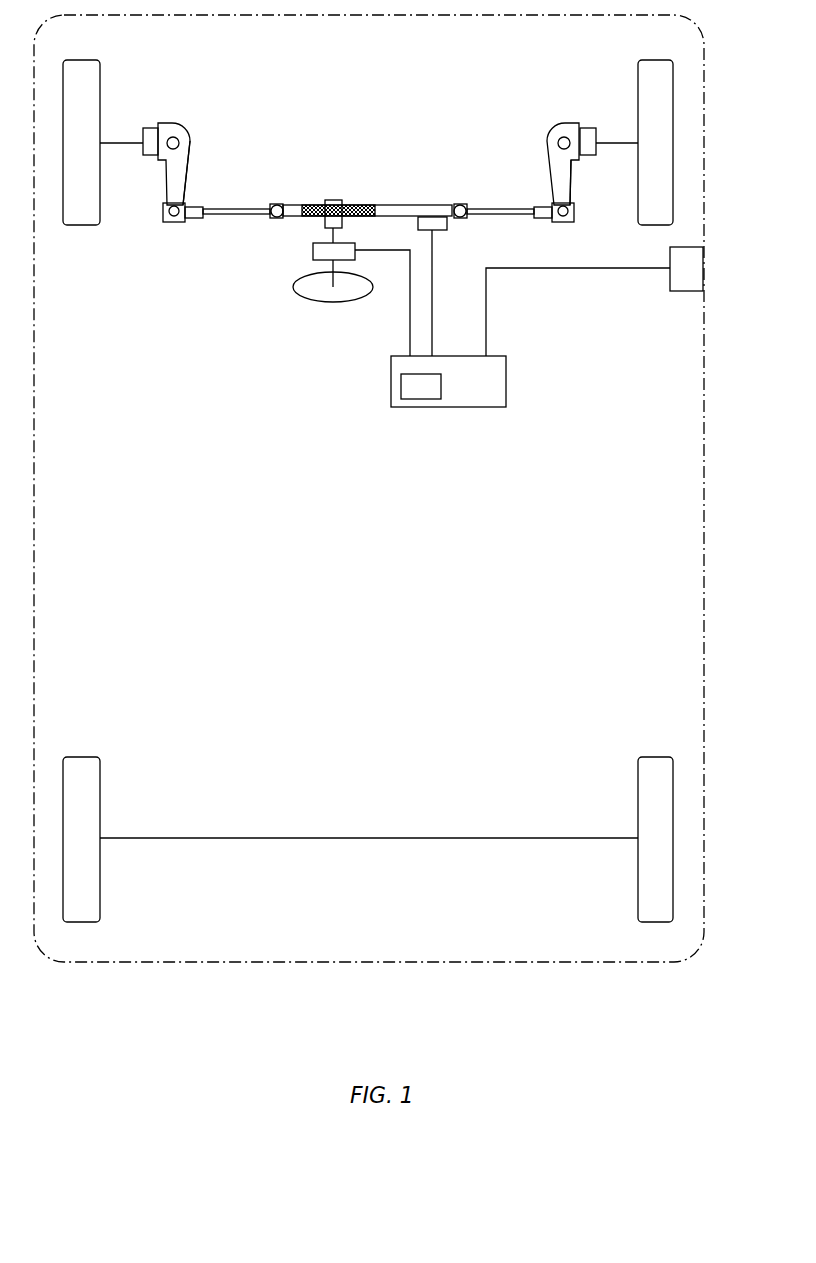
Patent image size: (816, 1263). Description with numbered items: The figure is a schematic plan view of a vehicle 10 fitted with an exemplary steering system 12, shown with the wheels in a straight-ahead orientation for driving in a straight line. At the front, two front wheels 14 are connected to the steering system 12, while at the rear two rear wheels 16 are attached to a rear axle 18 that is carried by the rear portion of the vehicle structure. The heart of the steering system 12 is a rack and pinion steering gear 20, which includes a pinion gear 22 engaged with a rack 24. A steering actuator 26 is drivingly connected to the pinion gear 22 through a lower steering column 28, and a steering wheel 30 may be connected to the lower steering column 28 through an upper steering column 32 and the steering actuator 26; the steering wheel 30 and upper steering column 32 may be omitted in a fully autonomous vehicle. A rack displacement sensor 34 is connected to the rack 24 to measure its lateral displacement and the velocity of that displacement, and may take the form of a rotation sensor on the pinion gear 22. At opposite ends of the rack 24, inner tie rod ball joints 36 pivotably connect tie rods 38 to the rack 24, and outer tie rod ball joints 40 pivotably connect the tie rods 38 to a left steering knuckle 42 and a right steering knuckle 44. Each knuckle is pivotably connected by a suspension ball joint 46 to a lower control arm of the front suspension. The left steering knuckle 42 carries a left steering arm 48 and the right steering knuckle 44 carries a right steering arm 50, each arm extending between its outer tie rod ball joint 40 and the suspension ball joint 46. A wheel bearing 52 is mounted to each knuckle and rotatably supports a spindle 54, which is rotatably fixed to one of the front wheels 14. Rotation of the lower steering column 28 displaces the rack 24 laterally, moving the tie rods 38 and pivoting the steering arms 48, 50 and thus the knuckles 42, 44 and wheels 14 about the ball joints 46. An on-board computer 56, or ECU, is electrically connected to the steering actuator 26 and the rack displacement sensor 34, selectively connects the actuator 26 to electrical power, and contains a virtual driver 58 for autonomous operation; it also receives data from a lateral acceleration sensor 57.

The vehicle 10 is at (707, 86).
The steering system 12 is at (452, 103).
The front wheels 14 is at (100, 75).
The rear wheels 16 is at (100, 771).
The rear axle 18 is at (333, 838).
The rack and pinion steering gear 20 is at (412, 204).
The pinion gear 22 is at (323, 222).
The rack 24 is at (350, 205).
The steering actuator 26 is at (312, 250).
The lower steering column 28 is at (338, 236).
The steering wheel 30 is at (298, 298).
The upper steering column 32 is at (338, 270).
The rack displacement sensor 34 is at (447, 228).
The inner tie rod ball joints 36 is at (275, 204).
The tie rods 38 is at (222, 218).
The outer tie rod ball joints 40 is at (163, 216).
The left steering knuckle 42 is at (166, 175).
The right steering knuckle 44 is at (550, 183).
The suspension ball joint 46 is at (178, 139).
The left steering arm 48 is at (187, 184).
The right steering arm 50 is at (576, 172).
The wheel bearing 52 is at (148, 128).
The spindle 54 is at (117, 141).
The on-board computer 56 is at (506, 372).
The lateral acceleration sensor 57 is at (668, 280).
The virtual driver 58 is at (406, 400).